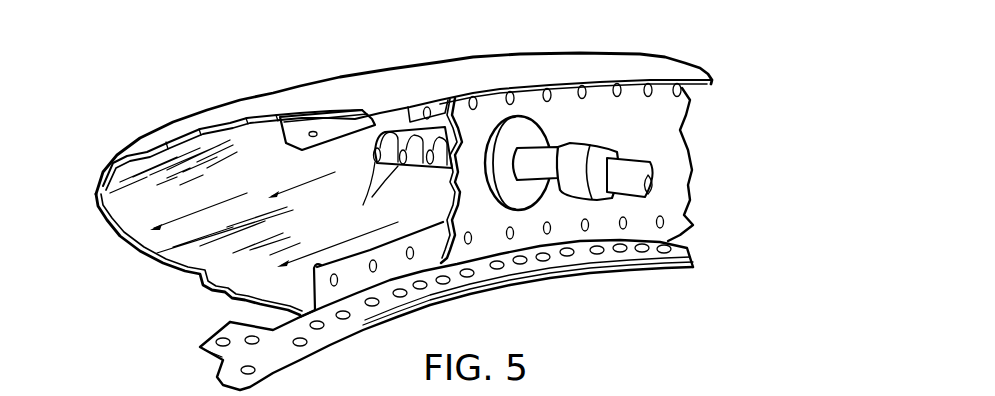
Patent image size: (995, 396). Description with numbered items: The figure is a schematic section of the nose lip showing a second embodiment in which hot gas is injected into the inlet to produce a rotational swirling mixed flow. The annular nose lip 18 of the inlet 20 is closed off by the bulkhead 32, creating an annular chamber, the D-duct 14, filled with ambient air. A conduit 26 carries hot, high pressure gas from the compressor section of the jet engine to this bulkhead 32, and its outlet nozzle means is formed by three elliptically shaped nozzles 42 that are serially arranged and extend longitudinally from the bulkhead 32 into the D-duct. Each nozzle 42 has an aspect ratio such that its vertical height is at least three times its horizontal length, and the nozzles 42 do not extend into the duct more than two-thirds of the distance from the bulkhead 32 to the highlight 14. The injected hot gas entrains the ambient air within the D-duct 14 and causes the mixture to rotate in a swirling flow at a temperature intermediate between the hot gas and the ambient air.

The D-duct 14 is at (96, 193).
The annular nose lip 18 is at (293, 110).
The inlet 20 is at (470, 55).
The conduit 26 is at (590, 157).
The bulkhead 32 is at (583, 210).
The elliptically shaped nozzles 42 is at (392, 172).